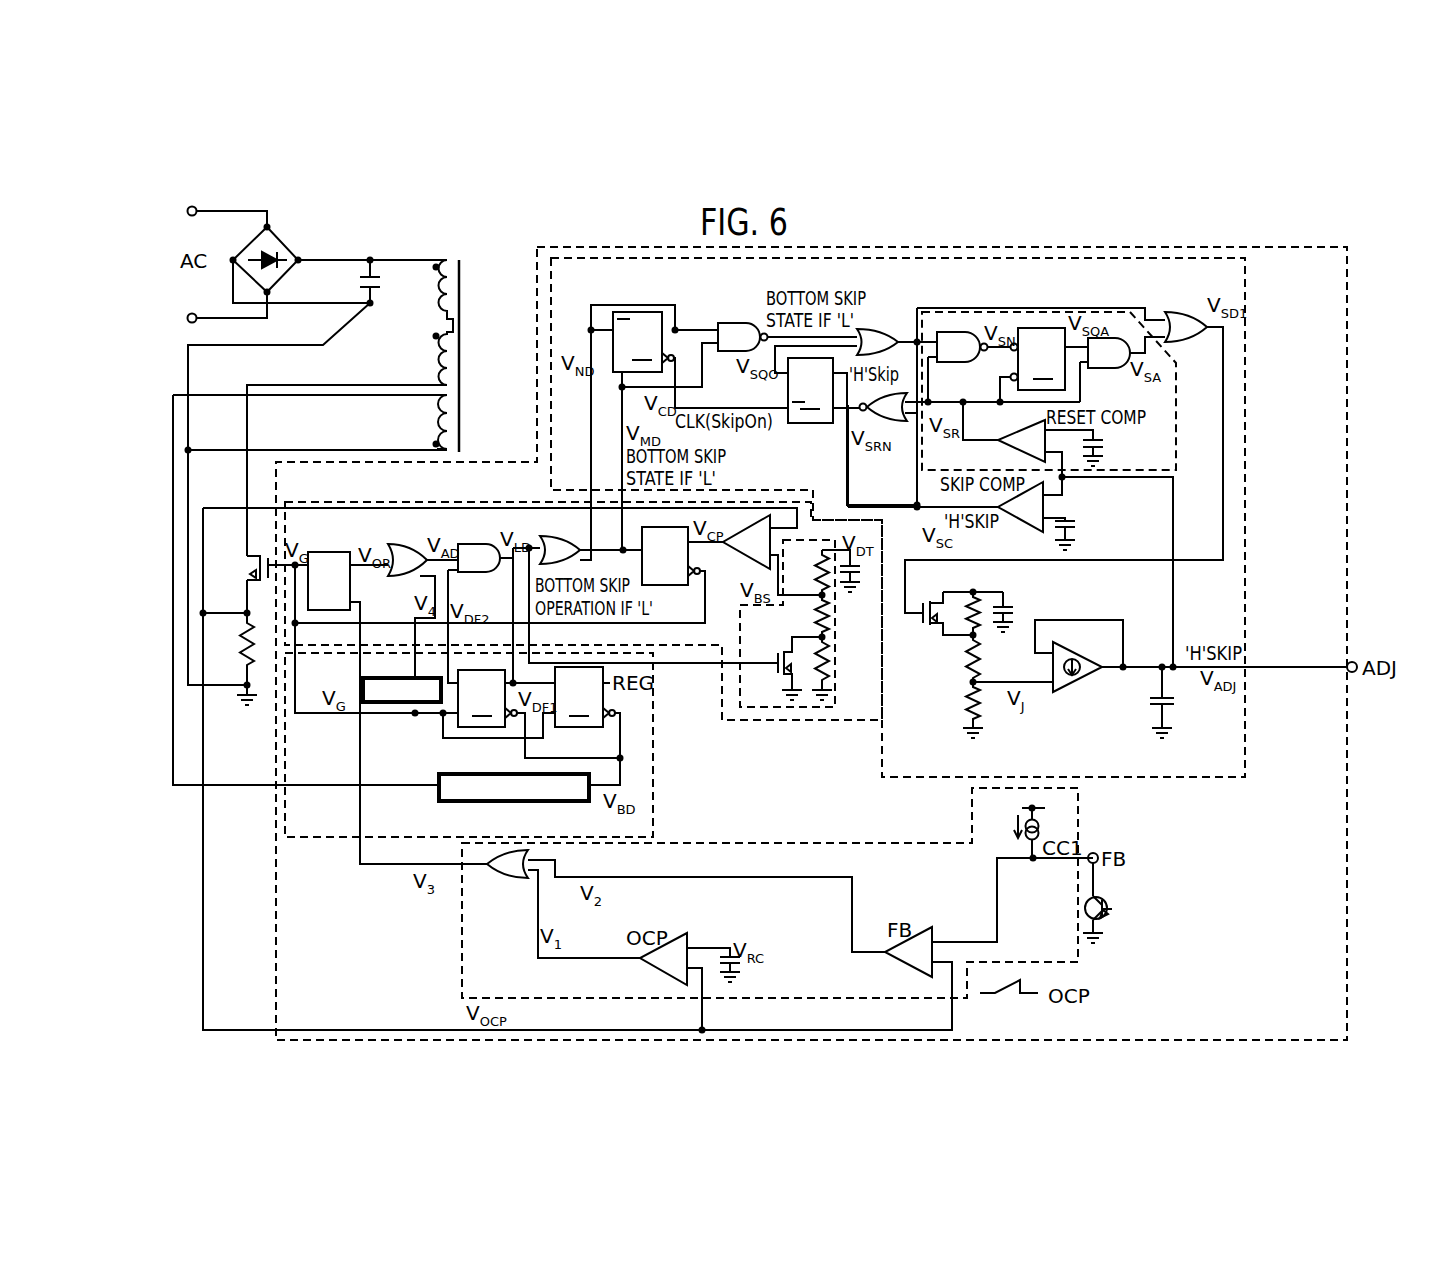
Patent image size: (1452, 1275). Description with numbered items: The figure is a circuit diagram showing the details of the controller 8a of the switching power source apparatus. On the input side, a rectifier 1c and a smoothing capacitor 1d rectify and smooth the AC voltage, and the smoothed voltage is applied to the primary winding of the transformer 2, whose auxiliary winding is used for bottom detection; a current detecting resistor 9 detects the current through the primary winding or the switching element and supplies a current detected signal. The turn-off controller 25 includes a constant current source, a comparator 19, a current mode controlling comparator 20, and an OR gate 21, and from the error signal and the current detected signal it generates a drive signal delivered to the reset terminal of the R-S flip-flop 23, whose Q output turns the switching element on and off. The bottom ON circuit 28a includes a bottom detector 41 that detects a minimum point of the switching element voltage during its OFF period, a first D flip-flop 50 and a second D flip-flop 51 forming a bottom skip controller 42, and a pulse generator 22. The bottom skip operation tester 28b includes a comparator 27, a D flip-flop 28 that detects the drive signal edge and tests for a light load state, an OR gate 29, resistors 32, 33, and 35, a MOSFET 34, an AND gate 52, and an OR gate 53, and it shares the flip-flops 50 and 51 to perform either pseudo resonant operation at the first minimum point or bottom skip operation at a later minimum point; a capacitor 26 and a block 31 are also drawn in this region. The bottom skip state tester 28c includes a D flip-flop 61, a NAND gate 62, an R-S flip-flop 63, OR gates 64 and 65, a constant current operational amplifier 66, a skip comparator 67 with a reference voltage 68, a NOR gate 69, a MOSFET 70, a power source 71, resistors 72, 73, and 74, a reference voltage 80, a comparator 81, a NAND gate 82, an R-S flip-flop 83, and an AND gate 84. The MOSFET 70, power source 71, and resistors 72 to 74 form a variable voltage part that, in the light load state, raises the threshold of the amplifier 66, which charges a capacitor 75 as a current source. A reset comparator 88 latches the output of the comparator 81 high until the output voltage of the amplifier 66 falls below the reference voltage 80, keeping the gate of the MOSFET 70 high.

The rectifier 1c is at (290, 247).
The smoothing capacitor 1d is at (356, 291).
The transformer 2 is at (447, 257).
The controller 8a is at (1350, 268).
The current detecting resistor 9 is at (240, 648).
The comparator 19 is at (685, 932).
The current mode controlling comparator 20 is at (893, 958).
The OR gate 21 is at (510, 880).
The pulse generator 22 is at (402, 705).
The R-S flip-flop 23 is at (333, 550).
The turn-off controller 25 is at (807, 840).
The capacitor 26 is at (870, 556).
The comparator 27 is at (728, 548).
The D flip-flop 28 is at (665, 587).
The bottom ON circuit 28a is at (322, 840).
The bottom skip operation tester 28b is at (488, 500).
The bottom skip state tester 28c is at (1248, 268).
The OR gate 29 is at (570, 534).
The switching element 31 is at (246, 562).
The resistor 32 is at (818, 582).
The resistor 33 is at (815, 625).
The MOSFET 34 is at (783, 690).
The resistor 35 is at (836, 662).
The bottom detector 41 is at (455, 772).
The bottom skip controller 42 is at (605, 738).
The first D flip-flop 50 is at (585, 698).
The second D flip-flop 51 is at (487, 699).
The AND gate 52 is at (495, 575).
The OR gate 53 is at (400, 578).
The D flip-flop 61 is at (653, 339).
The NAND gate 62 is at (740, 322).
The R-S flip-flop 63 is at (810, 391).
The OR gate 64 is at (885, 325).
The OR gate 65 is at (1195, 338).
The constant current operational amplifier 66 is at (1085, 680).
The skip comparator 67 is at (1012, 520).
The reference voltage 68 is at (1078, 528).
The NOR gate 69 is at (900, 420).
The MOSFET 70 is at (921, 603).
The power source 71 is at (1015, 610).
The resistor 72 is at (977, 600).
The resistor 73 is at (968, 655).
The resistor 74 is at (968, 704).
The capacitor 75 is at (1176, 705).
The reference voltage 80 is at (1105, 445).
The comparator 81 is at (1005, 436).
The NAND gate 82 is at (950, 364).
The R-S flip-flop 83 is at (1038, 360).
The AND gate 84 is at (1110, 368).
The reset comparator 88 is at (1178, 455).